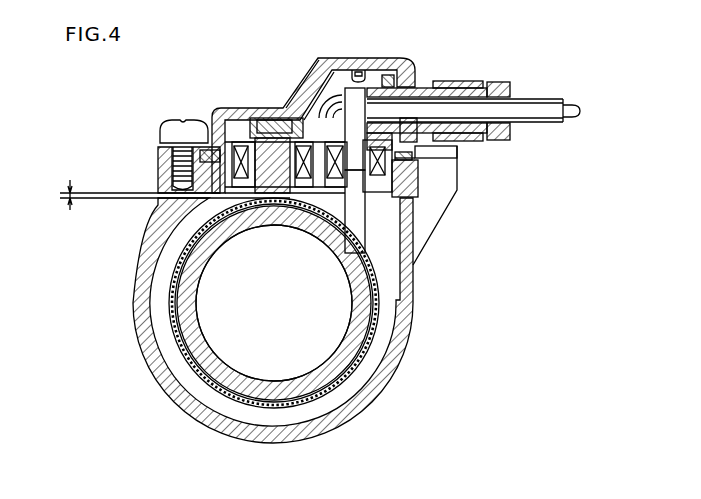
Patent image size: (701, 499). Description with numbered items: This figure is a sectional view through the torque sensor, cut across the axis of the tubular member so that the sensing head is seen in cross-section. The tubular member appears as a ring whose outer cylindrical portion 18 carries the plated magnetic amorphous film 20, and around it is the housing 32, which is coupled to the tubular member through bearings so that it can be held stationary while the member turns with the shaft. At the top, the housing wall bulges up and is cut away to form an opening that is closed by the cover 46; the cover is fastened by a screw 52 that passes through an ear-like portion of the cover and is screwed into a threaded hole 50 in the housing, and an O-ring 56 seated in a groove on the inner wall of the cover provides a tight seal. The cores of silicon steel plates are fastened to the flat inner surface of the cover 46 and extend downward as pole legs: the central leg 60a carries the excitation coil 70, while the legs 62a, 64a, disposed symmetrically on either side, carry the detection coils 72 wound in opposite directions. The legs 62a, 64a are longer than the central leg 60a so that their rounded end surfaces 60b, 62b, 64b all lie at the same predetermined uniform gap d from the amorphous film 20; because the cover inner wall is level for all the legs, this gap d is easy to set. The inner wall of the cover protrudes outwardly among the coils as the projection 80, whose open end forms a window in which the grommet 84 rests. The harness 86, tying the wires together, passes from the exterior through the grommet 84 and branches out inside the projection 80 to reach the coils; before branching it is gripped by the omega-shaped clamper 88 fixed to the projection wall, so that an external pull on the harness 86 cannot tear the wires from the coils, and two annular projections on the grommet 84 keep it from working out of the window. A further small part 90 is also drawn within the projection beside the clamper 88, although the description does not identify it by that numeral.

The cylindrical portion 18 is at (225, 228).
The magnetic amorphous film 20 is at (272, 213).
The housing 32 is at (410, 337).
The cover 46 is at (224, 107).
The threaded hole 50 is at (170, 153).
The screw 52 is at (180, 119).
The O-ring 56 is at (457, 157).
The central leg 60a is at (300, 217).
The end surface of central leg 60b is at (260, 217).
The leg 62a is at (460, 160).
The leg 64a is at (367, 210).
The end surface of leg 62b is at (460, 218).
The end surface of leg 64b is at (368, 243).
The excitation coil 70 is at (249, 118).
The detection coil 72 is at (381, 161).
The projection 80 is at (298, 86).
The grommet 84 is at (455, 82).
The harness 86 is at (546, 99).
The clamper 88 is at (353, 70).
The seal 90 is at (366, 78).
The gap d is at (175, 190).